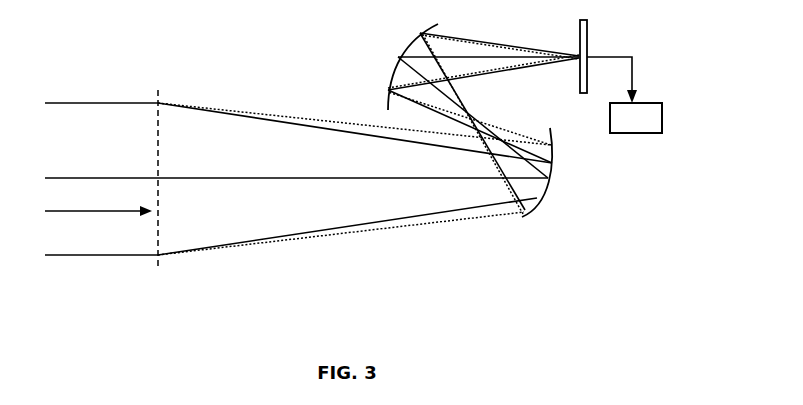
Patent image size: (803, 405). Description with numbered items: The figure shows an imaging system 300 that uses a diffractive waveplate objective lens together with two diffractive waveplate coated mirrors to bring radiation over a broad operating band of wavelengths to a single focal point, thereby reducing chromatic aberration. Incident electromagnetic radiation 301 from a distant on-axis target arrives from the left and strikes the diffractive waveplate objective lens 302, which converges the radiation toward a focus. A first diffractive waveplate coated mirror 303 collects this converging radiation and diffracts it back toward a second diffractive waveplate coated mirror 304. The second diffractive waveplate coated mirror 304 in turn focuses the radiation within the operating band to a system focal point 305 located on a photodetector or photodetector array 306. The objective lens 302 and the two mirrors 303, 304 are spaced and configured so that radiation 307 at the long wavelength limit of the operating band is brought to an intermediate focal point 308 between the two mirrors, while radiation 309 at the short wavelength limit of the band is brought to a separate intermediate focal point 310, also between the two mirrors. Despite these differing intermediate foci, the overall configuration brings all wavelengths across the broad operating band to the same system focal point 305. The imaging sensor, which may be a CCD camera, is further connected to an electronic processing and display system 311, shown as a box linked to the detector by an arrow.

The imaging system 300 is at (353, 162).
The incident electromagnetic radiation 301 is at (113, 241).
The diffractive waveplate objective lens 302 is at (158, 90).
The first diffractive waveplate coated mirror 303 is at (522, 217).
The second diffractive waveplate coated mirror 304 is at (386, 98).
The system focal point 305 is at (578, 54).
The photodetector or photodetector array 306 is at (577, 70).
The radiation at a first wavelength 307 is at (400, 218).
The intermediate focal point for radiation at a first wavelength 308 is at (516, 134).
The radiation at a wavelength shorter than the first wavelength 309 is at (452, 217).
The intermediate focal point for radiation at a wavelength shorter than the first wa 310 is at (471, 117).
The electronic processing and display 311 is at (630, 134).